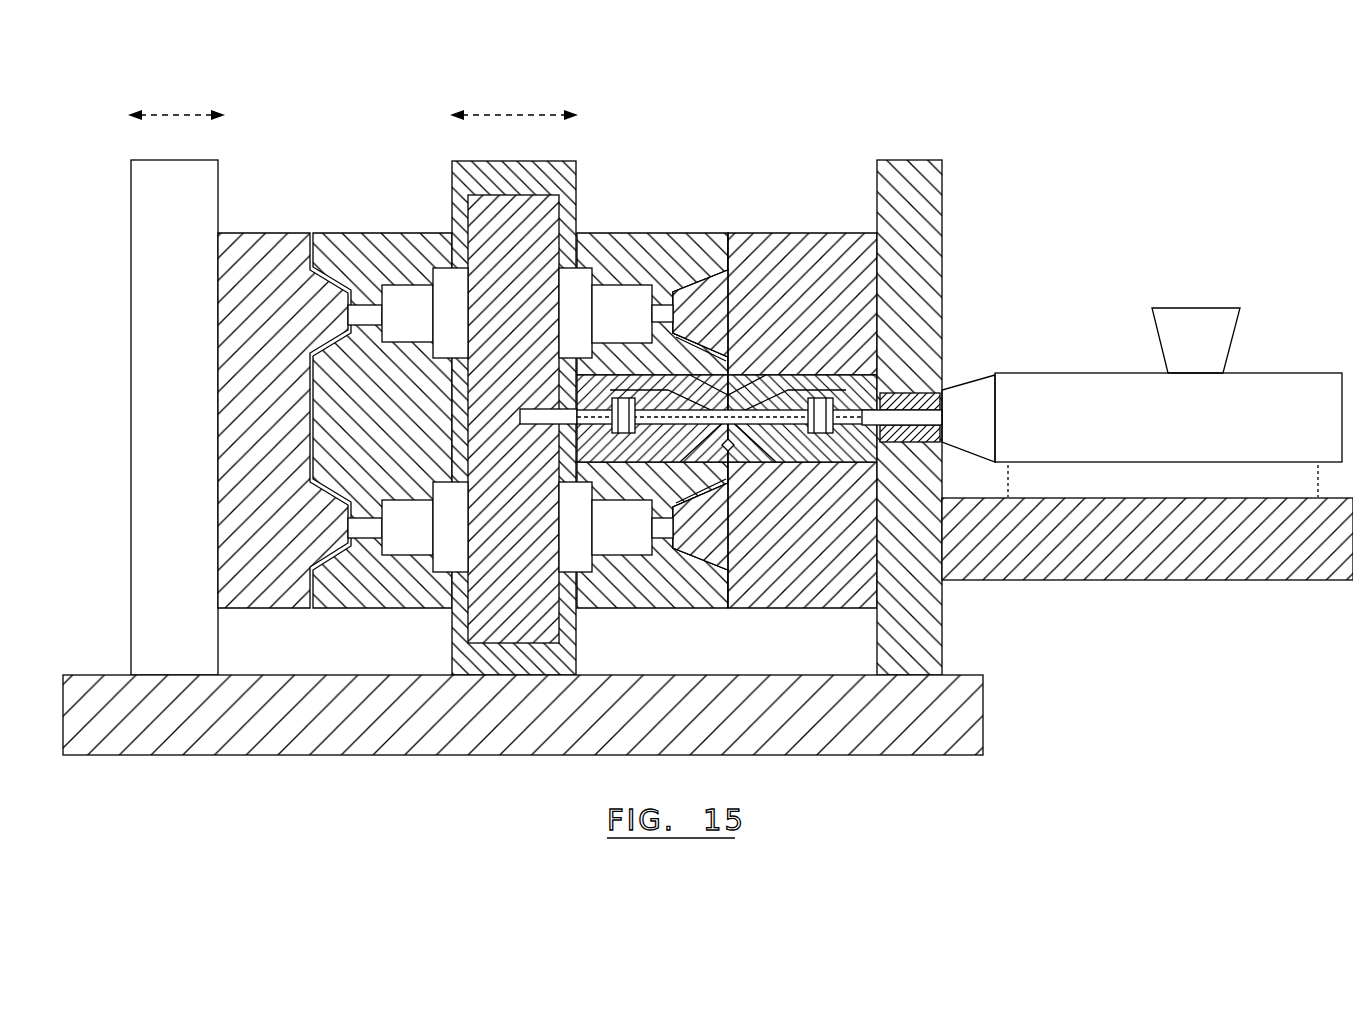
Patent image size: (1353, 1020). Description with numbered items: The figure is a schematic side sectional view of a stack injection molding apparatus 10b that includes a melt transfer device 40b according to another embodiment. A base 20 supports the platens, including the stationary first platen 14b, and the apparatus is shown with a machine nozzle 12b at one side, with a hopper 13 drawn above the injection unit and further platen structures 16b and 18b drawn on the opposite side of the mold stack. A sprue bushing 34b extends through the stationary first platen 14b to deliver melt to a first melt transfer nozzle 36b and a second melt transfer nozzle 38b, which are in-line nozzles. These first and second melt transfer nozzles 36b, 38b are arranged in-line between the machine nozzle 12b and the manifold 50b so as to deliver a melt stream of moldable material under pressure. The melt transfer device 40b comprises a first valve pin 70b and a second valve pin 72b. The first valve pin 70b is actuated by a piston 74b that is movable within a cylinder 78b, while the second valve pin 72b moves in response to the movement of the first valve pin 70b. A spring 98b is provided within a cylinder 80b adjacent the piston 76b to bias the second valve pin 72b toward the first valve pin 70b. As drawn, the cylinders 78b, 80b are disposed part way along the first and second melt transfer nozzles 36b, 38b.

The stack injection molding apparatus 10b is at (1013, 122).
The machine nozzle 12b is at (1305, 385).
The hopper 13 is at (1197, 318).
The stationary first platen 14b is at (933, 551).
The movable platen 16b is at (497, 657).
The clamp block 18b is at (201, 397).
The base 20 is at (975, 705).
The sprue bushing 34b is at (937, 400).
The first melt transfer nozzle 36b is at (773, 455).
The second melt transfer nozzle 38b is at (620, 448).
The melt transfer device 40b is at (718, 470).
The manifold 50b is at (540, 198).
The first valve pin 70b is at (800, 455).
The second valve pin 72b is at (660, 450).
The piston 74b is at (825, 420).
The piston 76b is at (728, 270).
The cylinder 78b is at (880, 358).
The cylinder 80b is at (615, 413).
The spring 98b is at (606, 407).